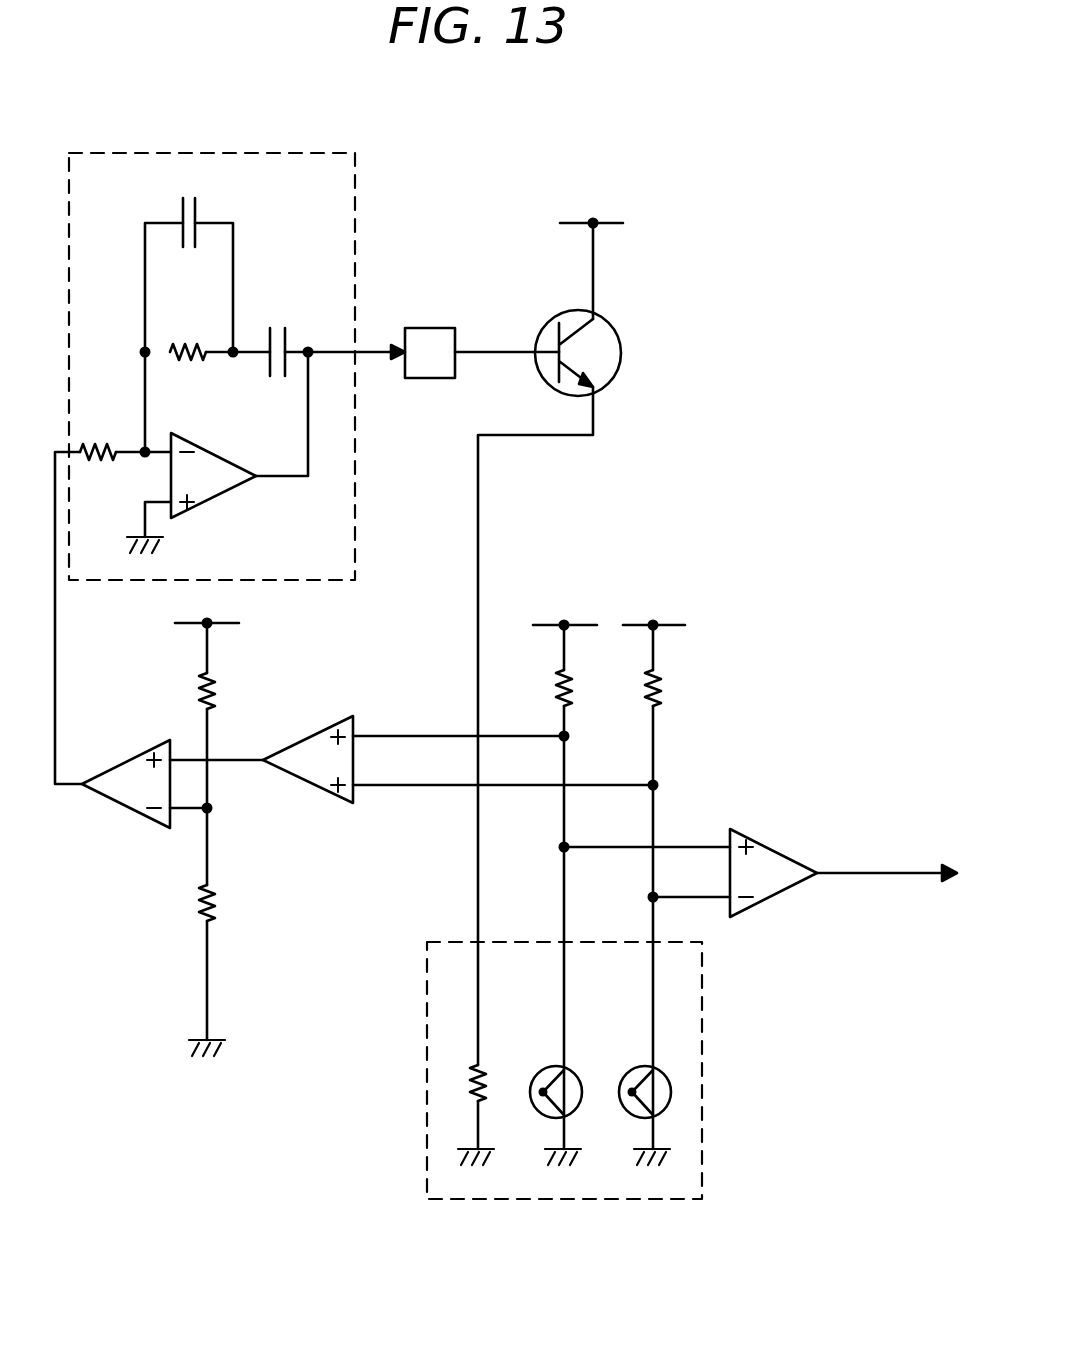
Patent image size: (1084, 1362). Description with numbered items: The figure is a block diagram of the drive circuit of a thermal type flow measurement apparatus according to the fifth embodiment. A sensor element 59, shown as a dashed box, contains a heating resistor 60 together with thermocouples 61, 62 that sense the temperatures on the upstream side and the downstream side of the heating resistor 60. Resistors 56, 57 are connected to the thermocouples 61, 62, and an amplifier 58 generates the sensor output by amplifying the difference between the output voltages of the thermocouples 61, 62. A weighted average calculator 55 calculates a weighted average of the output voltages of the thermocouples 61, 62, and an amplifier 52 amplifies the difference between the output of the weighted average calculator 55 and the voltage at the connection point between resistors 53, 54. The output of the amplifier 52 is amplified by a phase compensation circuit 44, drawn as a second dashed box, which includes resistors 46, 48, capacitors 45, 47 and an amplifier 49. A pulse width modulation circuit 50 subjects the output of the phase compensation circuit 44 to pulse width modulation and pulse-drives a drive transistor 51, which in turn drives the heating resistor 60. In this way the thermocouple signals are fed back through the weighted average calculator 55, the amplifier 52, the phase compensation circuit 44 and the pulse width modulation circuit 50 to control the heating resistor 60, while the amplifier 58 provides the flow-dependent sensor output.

The phase compensation circuit 44 is at (288, 153).
The capacitor 45 is at (196, 194).
The resistor 46 is at (184, 341).
The capacitor 47 is at (276, 328).
The resistor 48 is at (97, 438).
The amplifier 49 is at (214, 460).
The pulse width modulation circuit 50 is at (424, 330).
The drive transistor 51 is at (622, 339).
The amplifier 52 is at (130, 758).
The resistor 53 is at (221, 690).
The resistor 54 is at (223, 900).
The weighted average calculator 55 is at (320, 742).
The resistor 56 is at (583, 690).
The resistor 57 is at (671, 690).
The amplifier 58 is at (768, 848).
The sensor element 59 is at (431, 941).
The heating resistor 60 is at (488, 1079).
The thermocouple 61 is at (573, 1080).
The thermocouple 62 is at (661, 1080).